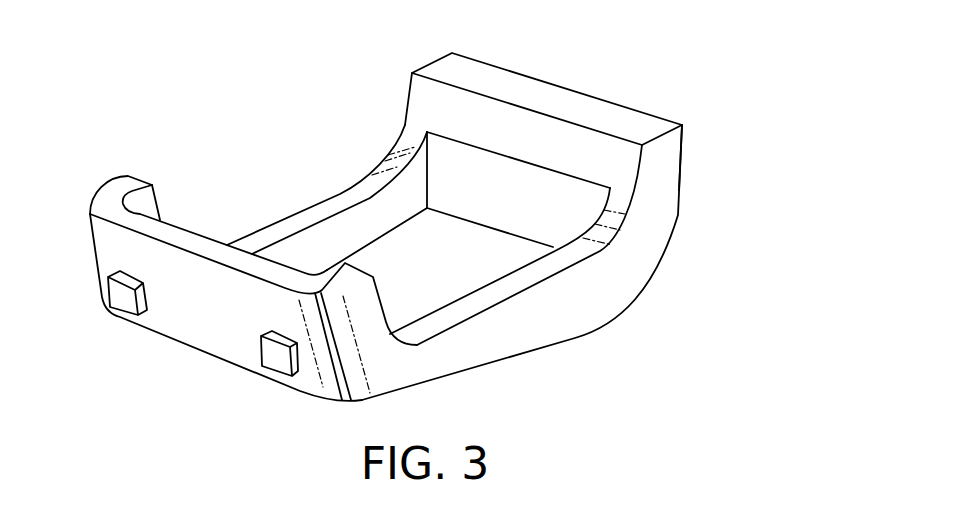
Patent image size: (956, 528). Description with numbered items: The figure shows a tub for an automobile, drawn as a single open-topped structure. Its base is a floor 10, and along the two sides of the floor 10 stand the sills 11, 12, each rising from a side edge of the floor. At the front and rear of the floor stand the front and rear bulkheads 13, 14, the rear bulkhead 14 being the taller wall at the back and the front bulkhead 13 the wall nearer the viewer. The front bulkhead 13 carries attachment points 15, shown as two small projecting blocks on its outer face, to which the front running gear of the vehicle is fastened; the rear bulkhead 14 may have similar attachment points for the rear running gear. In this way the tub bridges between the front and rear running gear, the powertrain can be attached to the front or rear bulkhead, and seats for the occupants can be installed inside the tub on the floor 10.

The floor 10 is at (460, 288).
The sill 11 is at (572, 263).
The sill 12 is at (328, 207).
The front bulkhead 13 is at (227, 263).
The rear bulkhead 14 is at (560, 102).
The attachment points 15 is at (128, 303).